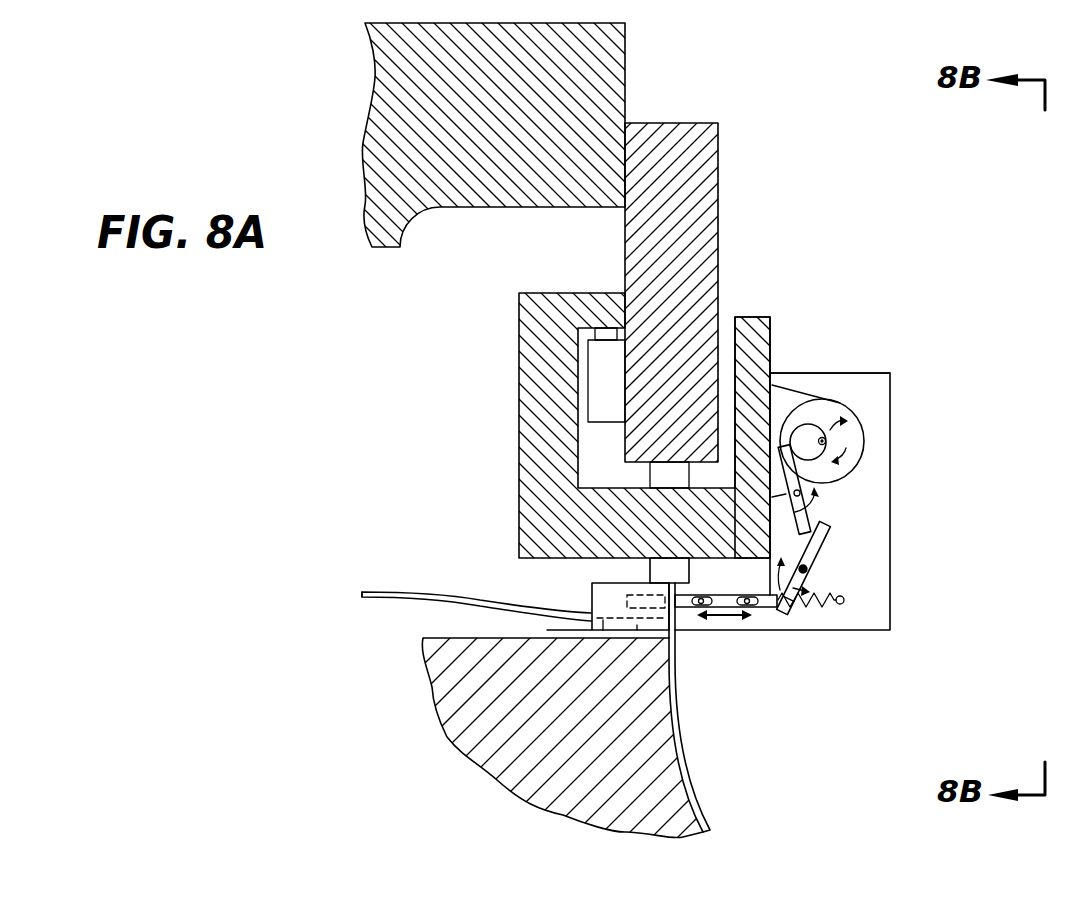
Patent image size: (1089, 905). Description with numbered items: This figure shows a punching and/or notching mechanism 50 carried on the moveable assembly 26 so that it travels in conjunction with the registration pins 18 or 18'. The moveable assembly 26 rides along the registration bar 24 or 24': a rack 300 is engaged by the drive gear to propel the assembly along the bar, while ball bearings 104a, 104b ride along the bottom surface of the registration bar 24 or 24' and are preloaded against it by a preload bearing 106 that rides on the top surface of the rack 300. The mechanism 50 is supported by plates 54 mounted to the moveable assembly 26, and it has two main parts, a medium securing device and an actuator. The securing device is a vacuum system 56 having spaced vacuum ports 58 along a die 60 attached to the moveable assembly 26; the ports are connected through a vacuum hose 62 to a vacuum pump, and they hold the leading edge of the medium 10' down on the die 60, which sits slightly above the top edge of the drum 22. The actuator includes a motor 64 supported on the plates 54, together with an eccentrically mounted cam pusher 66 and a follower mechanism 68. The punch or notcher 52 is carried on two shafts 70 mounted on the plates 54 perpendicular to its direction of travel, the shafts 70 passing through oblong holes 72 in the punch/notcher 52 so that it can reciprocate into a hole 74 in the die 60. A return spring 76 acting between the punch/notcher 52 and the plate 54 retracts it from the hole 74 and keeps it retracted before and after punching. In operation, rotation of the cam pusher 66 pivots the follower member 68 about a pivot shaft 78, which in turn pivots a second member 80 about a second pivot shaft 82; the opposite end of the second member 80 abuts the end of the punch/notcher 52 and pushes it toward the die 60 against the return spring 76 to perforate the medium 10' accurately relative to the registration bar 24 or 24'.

The medium 10' is at (715, 707).
The registration pins 18 is at (559, 438).
The registration pins 18' is at (644, 438).
The drum 22 is at (460, 707).
The registration bar 24 is at (752, 292).
The registration bar 24' is at (671, 292).
The moveable assembly 26 is at (753, 316).
The punching and/or notching mechanism 50 is at (890, 523).
The punch or notcher 52 is at (770, 606).
The plates 54 is at (808, 372).
The vacuum system 56 is at (444, 582).
The vacuum ports 58 is at (603, 622).
The die 60 is at (637, 630).
The vacuum hose 62 is at (438, 600).
The motor 64 is at (843, 398).
The cam pusher 66 is at (830, 432).
The follower mechanism 68 is at (810, 516).
The shafts 70 is at (760, 607).
The oblong holes 72 is at (690, 607).
The hole 74 is at (640, 598).
The return spring 76 is at (824, 608).
The pivot shaft 78 is at (826, 441).
The second member 80 is at (828, 530).
The second pivot shaft 82 is at (808, 569).
The ball bearing 104a is at (500, 465).
The ball bearing 104b is at (650, 476).
The preload bearing 106 is at (605, 334).
The rack 300 is at (605, 388).